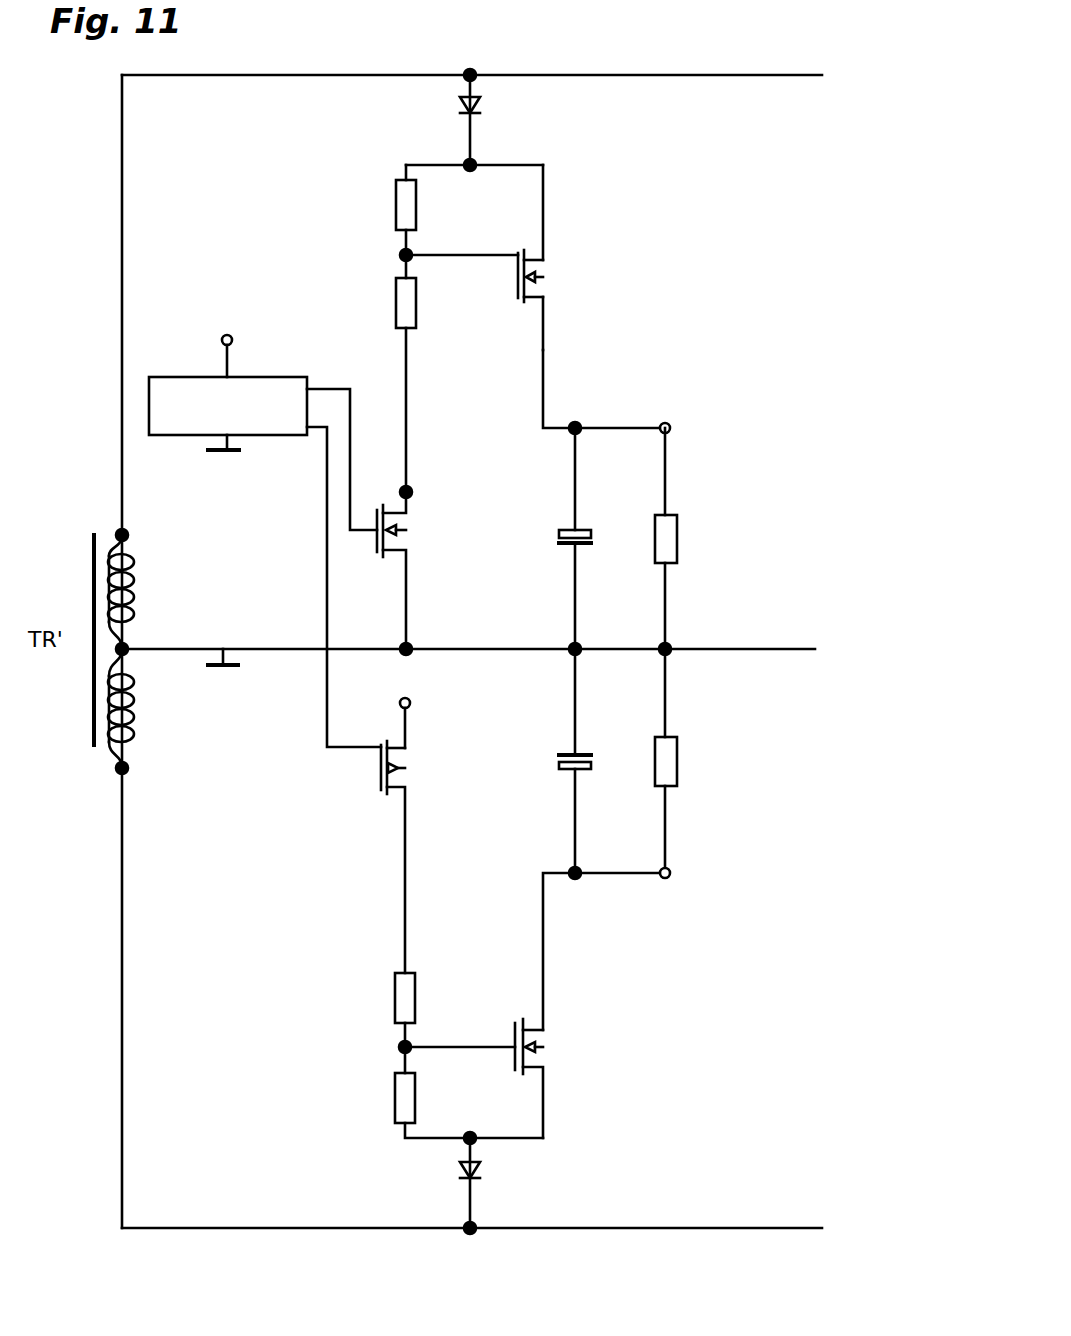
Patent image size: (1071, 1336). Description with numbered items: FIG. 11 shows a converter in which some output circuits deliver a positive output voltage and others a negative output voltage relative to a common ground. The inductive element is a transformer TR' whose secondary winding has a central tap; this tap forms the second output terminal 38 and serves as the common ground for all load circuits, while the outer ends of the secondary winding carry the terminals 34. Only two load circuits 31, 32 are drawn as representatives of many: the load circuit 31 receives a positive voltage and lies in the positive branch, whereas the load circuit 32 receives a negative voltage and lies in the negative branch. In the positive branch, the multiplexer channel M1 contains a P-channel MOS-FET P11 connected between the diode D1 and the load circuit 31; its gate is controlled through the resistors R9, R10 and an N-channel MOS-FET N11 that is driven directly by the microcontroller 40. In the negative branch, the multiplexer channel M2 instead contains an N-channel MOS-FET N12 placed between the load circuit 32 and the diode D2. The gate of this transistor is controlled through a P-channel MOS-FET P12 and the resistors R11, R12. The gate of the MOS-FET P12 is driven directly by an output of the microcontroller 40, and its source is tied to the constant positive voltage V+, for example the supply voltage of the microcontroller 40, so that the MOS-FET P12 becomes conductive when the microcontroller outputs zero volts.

The diode D1 is at (499, 123).
The resistor R9 is at (434, 213).
The resistor R10 is at (439, 373).
The P-channel MOS-FET P11 is at (510, 257).
The multiplexer channel M1 is at (544, 355).
The load circuit 31 is at (665, 473).
The load circuit 32 is at (665, 825).
The multiplexer channel M2 is at (543, 953).
The microcontroller 40 is at (272, 435).
The N-channel MOS-FET N11 is at (427, 567).
The P-channel MOS-FET P12 is at (428, 834).
The resistor R11 is at (438, 1013).
The resistor R12 is at (469, 1092).
The N-channel MOS-FET N12 is at (507, 1078).
The diode D2 is at (500, 1180).
The transformer winding end 34 is at (122, 535).
The second output terminal 38 is at (155, 652).